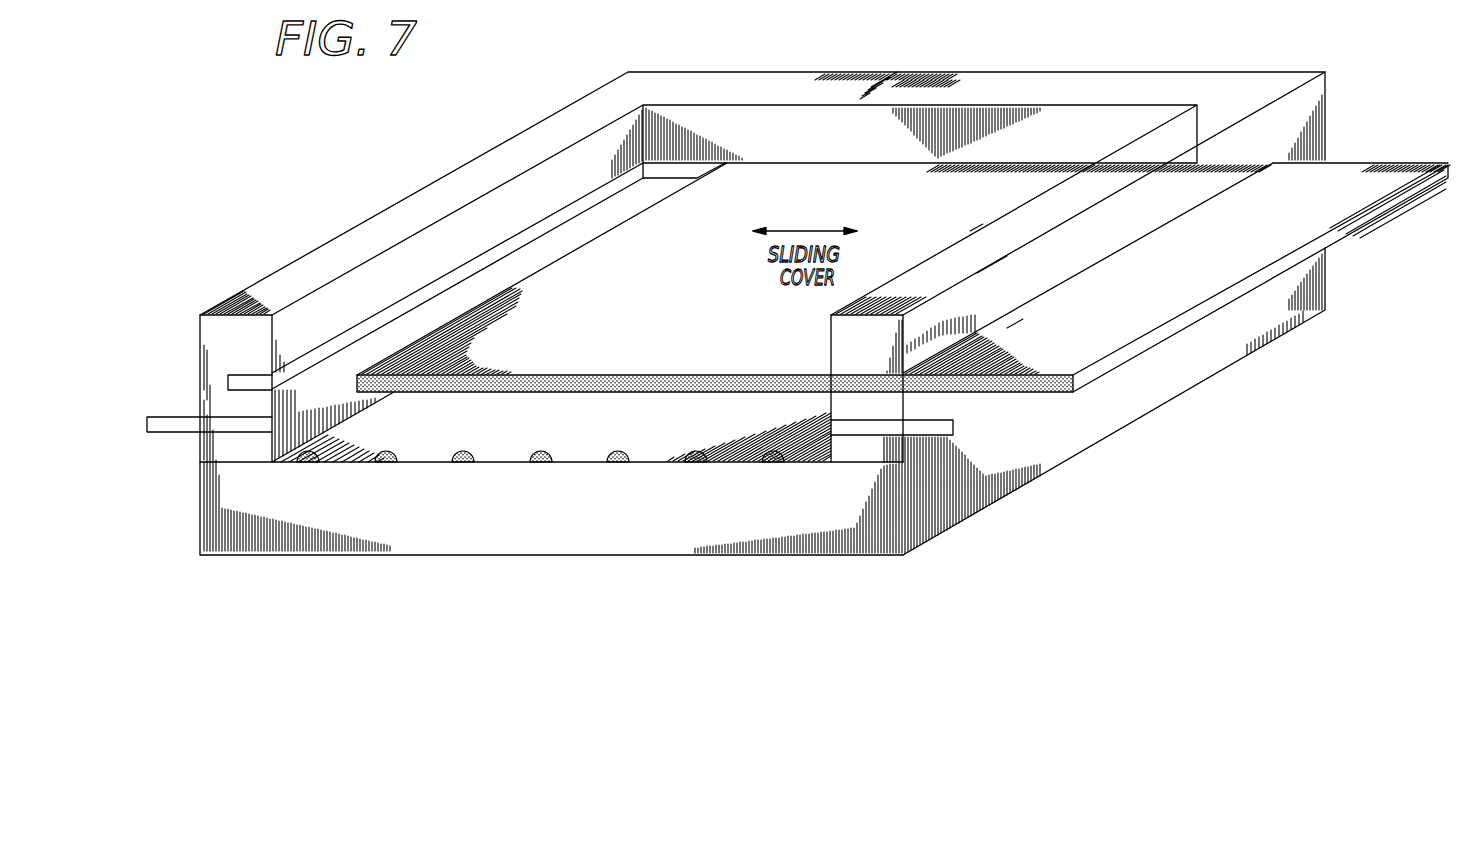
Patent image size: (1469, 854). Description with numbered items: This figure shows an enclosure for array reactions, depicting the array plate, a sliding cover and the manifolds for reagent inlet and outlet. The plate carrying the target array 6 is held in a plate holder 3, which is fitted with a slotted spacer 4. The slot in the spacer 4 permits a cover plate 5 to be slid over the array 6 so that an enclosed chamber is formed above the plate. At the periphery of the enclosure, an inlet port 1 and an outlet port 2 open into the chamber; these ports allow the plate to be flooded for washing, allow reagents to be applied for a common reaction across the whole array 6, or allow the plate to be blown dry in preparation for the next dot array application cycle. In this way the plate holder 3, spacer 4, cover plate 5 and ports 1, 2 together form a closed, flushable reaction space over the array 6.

The peripheral inlet port 1 is at (920, 428).
The peripheral outlet port 2 is at (173, 425).
The plate holder 3 is at (338, 262).
The slotted spacer 4 is at (237, 382).
The cover plate 5 is at (1123, 355).
The array 6 is at (563, 527).